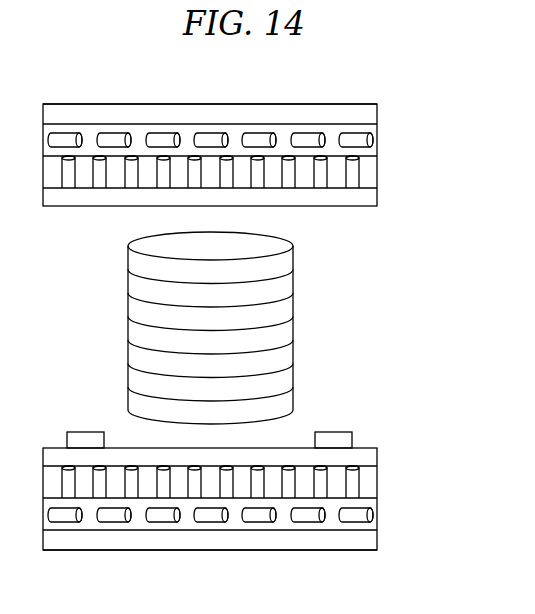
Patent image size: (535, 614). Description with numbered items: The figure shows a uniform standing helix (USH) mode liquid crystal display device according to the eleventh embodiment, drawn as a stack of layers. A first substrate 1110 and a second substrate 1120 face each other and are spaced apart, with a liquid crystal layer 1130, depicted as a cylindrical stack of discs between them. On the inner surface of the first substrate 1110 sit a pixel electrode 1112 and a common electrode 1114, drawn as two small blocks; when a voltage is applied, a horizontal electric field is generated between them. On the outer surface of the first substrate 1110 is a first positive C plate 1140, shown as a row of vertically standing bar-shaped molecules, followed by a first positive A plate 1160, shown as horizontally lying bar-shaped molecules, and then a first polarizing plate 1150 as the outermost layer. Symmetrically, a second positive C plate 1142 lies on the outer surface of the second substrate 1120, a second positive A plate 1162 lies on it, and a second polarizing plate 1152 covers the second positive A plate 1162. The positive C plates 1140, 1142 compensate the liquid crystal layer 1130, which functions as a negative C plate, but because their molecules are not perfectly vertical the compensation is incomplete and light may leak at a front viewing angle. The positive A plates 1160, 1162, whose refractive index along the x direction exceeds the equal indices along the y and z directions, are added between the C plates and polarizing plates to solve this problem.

The first substrate 1110 is at (364, 458).
The pixel electrode 1112 is at (88, 437).
The common electrode 1114 is at (332, 440).
The second substrate 1120 is at (365, 198).
The liquid crystal layer 1130 is at (308, 322).
The first positive C plate 1140 is at (371, 482).
The second positive C plate 1142 is at (370, 170).
The first polarizing plate 1150 is at (365, 542).
The second polarizing plate 1152 is at (364, 113).
The first positive A plate 1160 is at (373, 515).
The second positive A plate 1162 is at (378, 141).